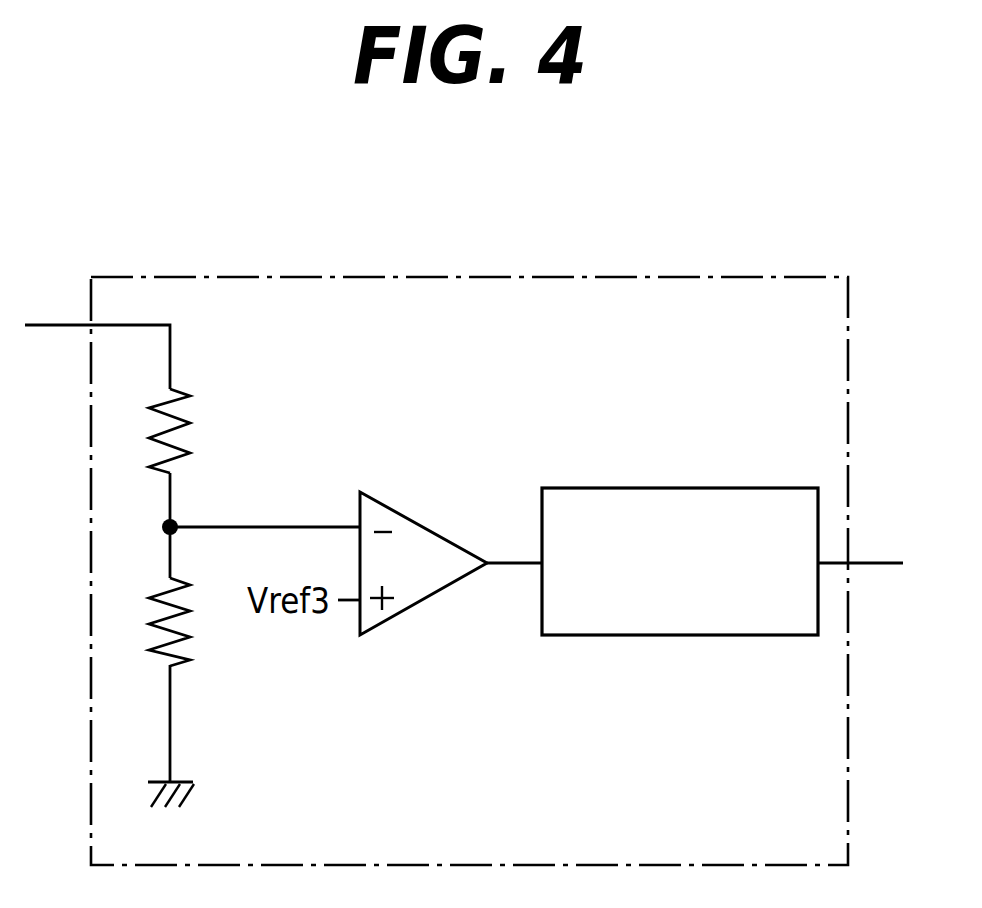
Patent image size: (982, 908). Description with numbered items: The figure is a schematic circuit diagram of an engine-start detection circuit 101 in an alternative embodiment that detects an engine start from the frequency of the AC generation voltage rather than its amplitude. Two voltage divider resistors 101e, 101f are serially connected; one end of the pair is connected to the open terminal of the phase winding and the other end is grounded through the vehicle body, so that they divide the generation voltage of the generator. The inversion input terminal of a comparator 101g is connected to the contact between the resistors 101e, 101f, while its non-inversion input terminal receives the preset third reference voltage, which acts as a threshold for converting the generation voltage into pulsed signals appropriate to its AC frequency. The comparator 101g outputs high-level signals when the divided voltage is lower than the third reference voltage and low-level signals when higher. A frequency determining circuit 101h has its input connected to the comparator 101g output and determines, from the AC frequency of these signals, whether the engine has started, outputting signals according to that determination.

The engine-start detection circuit 101 is at (358, 265).
The voltage divider resistor 101e is at (192, 443).
The voltage divider resistor 101f is at (182, 643).
The comparator 101g is at (412, 517).
The frequency determining circuit 101h is at (590, 488).